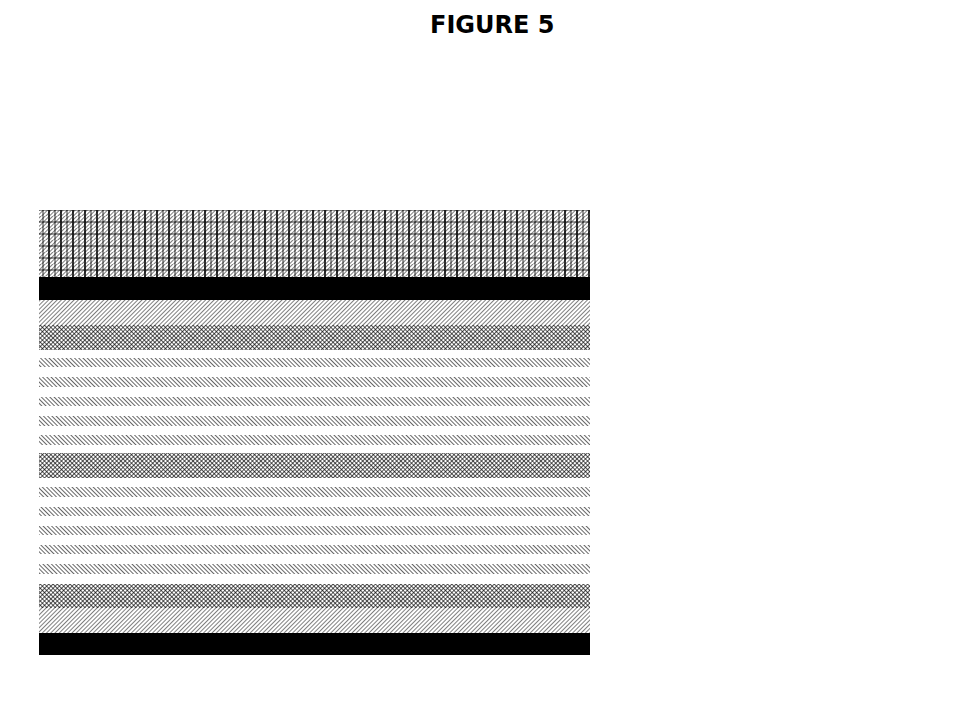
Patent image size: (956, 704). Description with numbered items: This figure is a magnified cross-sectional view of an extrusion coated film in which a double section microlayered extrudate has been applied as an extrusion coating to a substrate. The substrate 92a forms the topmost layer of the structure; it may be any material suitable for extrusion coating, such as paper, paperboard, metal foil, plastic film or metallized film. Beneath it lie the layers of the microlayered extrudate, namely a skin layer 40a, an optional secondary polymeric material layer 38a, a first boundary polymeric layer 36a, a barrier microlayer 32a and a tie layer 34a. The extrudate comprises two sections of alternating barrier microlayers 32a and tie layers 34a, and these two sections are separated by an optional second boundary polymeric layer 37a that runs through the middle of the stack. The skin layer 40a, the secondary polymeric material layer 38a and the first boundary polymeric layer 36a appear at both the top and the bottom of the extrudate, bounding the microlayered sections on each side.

The outer cover layer 92a is at (608, 249).
The skin layer 40a is at (597, 290).
The secondary polymeric material layer 38a is at (597, 313).
The first boundary polymeric layer 36a is at (597, 333).
The barrier microlayer 32a is at (597, 356).
The tie layer 34a is at (593, 402).
The second boundary polymeric layer 37a is at (593, 463).